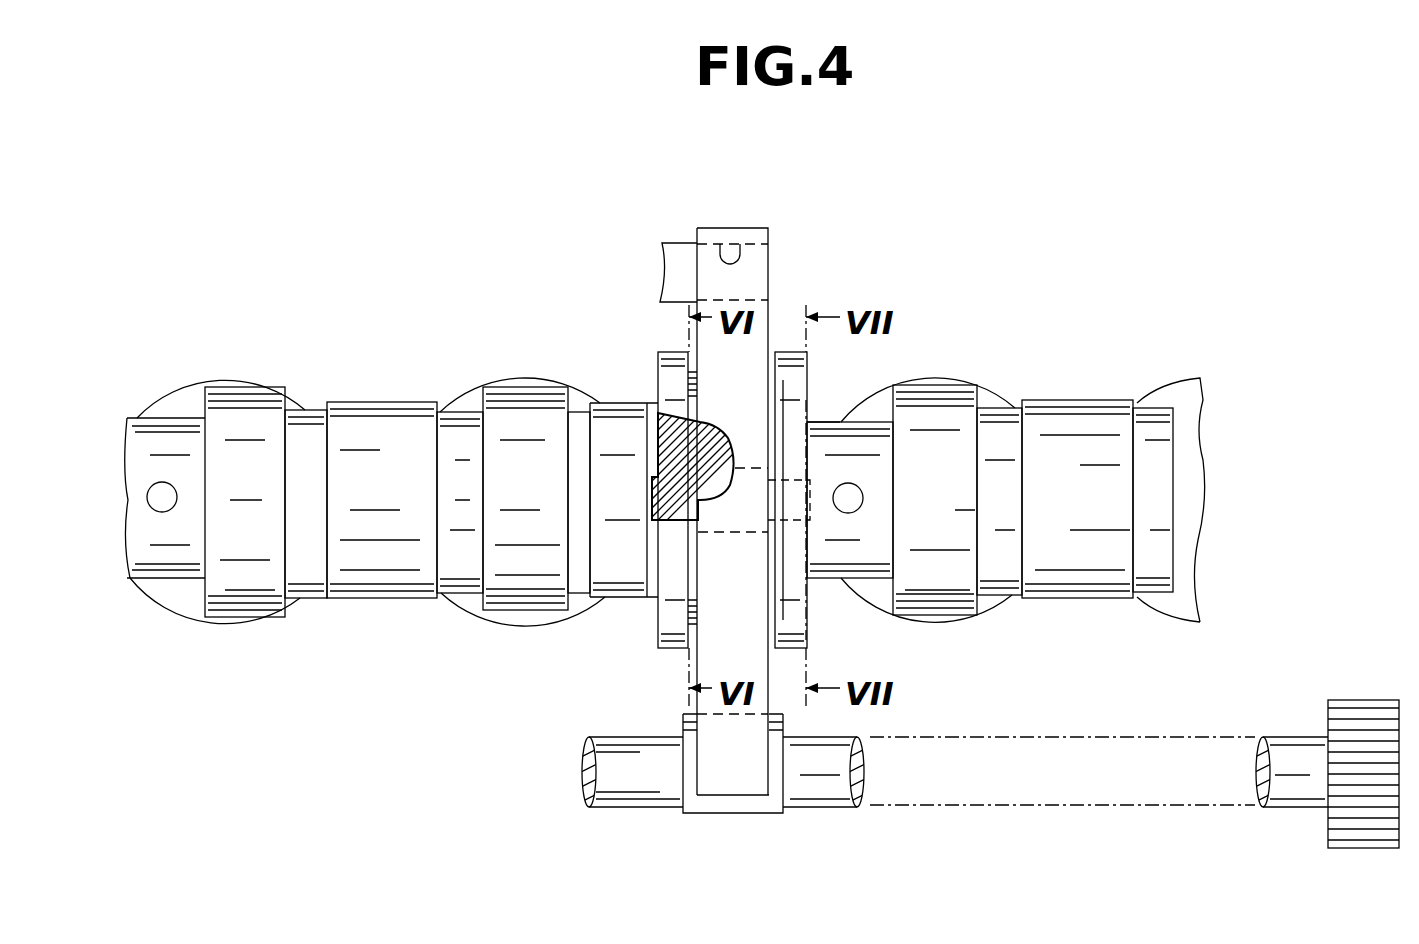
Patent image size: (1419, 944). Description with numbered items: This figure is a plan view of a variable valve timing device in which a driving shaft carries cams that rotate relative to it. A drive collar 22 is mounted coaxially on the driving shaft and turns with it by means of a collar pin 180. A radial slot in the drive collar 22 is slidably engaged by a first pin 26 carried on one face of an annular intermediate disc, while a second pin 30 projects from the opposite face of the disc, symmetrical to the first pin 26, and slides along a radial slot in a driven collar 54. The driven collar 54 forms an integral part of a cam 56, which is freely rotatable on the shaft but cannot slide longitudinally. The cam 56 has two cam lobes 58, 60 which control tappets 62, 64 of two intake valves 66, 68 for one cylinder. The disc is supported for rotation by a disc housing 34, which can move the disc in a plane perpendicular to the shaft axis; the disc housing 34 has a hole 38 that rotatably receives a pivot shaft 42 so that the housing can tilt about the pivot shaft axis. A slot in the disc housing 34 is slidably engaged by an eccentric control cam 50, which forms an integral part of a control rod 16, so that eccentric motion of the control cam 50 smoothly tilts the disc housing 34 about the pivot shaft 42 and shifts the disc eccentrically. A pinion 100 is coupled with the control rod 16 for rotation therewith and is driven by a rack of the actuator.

The control rod 16 is at (832, 775).
The drive collar 22 is at (710, 473).
The first pin 26 is at (790, 527).
The second pin 30 is at (890, 383).
The disc housing 34 is at (747, 762).
The hole 38 is at (738, 250).
The pivot shaft 42 is at (675, 248).
The eccentric control cam 50 is at (707, 807).
The driven collar 54 is at (663, 373).
The cam 56 is at (462, 422).
The cam lobe 58 is at (243, 395).
The cam lobe 60 is at (527, 387).
The tappet 62 is at (303, 603).
The tappet 64 is at (462, 620).
The intake valve 66 is at (178, 402).
The intake valve 68 is at (555, 623).
The pinion 100 is at (1362, 705).
The collar pin 180 is at (852, 502).